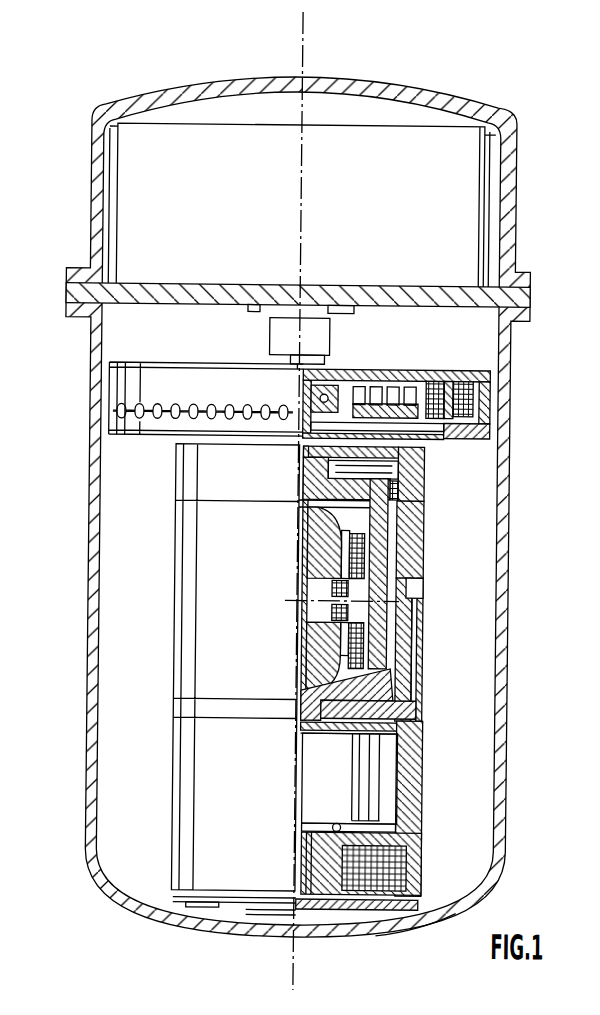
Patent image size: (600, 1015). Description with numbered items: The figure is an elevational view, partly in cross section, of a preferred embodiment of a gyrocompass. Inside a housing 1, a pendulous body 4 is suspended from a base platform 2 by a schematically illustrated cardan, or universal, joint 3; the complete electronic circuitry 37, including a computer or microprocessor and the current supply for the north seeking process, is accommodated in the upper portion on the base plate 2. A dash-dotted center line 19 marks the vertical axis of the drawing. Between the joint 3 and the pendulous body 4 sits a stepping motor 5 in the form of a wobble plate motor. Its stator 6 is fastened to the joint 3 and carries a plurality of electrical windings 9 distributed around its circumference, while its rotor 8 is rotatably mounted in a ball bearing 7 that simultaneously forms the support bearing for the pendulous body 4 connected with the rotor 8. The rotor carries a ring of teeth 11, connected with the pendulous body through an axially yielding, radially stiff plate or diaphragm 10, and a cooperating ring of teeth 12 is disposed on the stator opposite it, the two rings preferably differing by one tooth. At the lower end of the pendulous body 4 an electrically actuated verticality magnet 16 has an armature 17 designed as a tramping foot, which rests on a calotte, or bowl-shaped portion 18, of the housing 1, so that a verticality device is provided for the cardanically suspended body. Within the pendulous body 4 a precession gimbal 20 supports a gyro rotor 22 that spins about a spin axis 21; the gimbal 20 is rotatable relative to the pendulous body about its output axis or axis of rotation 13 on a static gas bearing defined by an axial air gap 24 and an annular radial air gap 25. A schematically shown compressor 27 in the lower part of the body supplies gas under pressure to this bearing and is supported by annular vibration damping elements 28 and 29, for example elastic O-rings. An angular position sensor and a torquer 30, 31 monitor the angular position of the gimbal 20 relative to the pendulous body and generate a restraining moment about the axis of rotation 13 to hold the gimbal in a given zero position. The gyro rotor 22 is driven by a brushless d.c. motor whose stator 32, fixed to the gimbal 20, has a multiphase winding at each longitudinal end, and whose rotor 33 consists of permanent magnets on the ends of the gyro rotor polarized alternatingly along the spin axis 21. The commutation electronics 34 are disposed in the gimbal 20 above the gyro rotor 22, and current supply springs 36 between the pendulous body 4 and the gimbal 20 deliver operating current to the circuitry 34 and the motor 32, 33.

The housing 1 is at (89, 346).
The base platform 2 is at (68, 296).
The cardan joint 3 is at (328, 339).
The pendulous body 4 is at (206, 570).
The stepping motor 5 is at (120, 385).
The stator 6 is at (489, 401).
The ball bearing 7 is at (306, 400).
The rotor 8 is at (172, 439).
The electrical windings 9 is at (489, 386).
The diaphragm 10 is at (418, 430).
The ring of teeth 11 is at (489, 437).
The ring of teeth 12 is at (489, 421).
The axis of rotation 13 is at (298, 976).
The verticality magnet 16 is at (394, 860).
The armature 17 is at (316, 906).
The calotte 18 is at (412, 924).
The longitudinal axis 19 is at (298, 38).
The precession gimbal 20 is at (380, 686).
The spin axis 21 is at (412, 616).
The gyro rotor 22 is at (317, 657).
The axial air gap 24 is at (385, 706).
The radial air gap 25 is at (396, 658).
The compressor 27 is at (330, 782).
The vibration damping element 28 is at (395, 731).
The vibration damping element 29 is at (400, 825).
The angular position sensor 30 is at (410, 492).
The torquer 31 is at (363, 469).
The stator 32 is at (352, 545).
The rotor 33 is at (424, 588).
The commutation electronics 34 is at (385, 521).
The current supply springs 36 is at (425, 484).
The electronic circuitry 37 is at (134, 185).